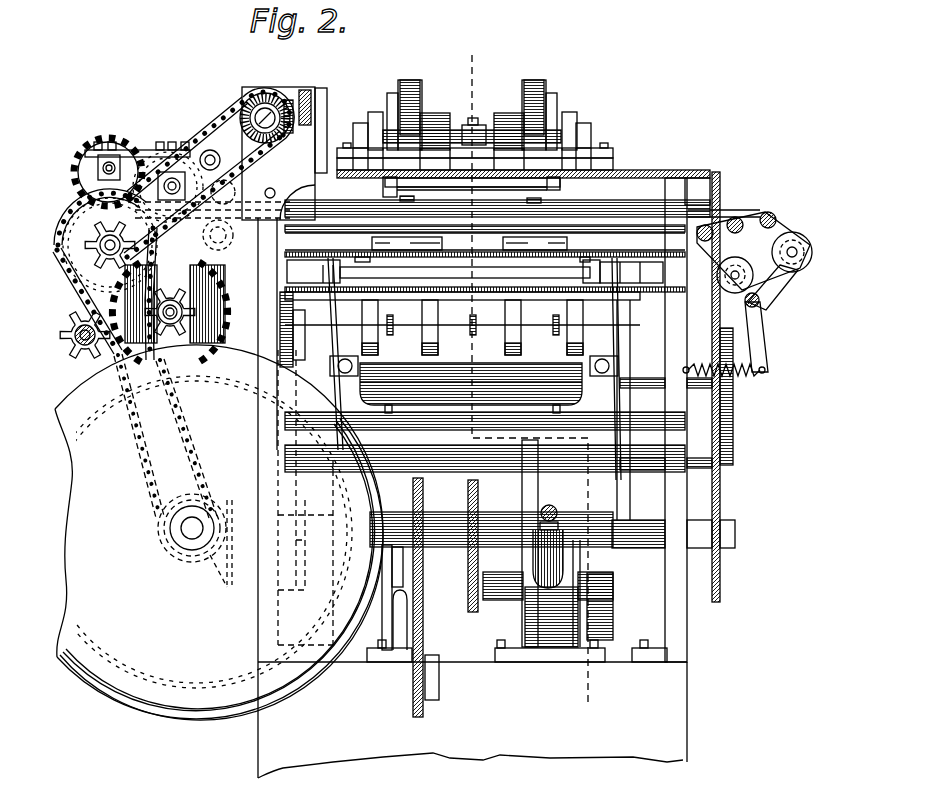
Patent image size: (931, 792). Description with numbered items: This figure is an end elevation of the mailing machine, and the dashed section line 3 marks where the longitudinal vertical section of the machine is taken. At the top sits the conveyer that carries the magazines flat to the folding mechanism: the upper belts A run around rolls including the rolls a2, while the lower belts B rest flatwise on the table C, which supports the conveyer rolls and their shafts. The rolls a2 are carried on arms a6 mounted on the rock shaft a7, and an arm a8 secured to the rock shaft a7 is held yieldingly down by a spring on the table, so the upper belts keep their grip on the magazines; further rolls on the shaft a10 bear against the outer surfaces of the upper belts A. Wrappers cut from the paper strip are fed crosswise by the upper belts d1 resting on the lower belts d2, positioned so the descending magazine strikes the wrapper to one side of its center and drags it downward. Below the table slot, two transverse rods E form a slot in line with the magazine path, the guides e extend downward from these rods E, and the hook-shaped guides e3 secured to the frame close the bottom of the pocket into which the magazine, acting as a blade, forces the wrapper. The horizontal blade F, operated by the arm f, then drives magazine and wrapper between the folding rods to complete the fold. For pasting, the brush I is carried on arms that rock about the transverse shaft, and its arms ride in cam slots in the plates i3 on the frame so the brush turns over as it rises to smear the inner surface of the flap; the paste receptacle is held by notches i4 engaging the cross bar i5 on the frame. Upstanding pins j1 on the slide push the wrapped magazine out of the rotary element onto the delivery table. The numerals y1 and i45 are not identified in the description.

The table C is at (634, 176).
The upper belts d1 is at (314, 217).
The lower belts d2 is at (631, 256).
The transverse rods E is at (582, 203).
The guides e is at (469, 243).
The horizontal blade F is at (540, 272).
The arm f is at (327, 338).
The hook-shaped guides e3 is at (512, 382).
The stud y1 is at (478, 332).
The upstanding pins j1 is at (560, 324).
The brush I is at (471, 384).
The plates i3 is at (471, 379).
The notches i4 is at (395, 412).
The cross bar i5 is at (485, 427).
The leg i45 is at (555, 412).
The section line 3- 3 is at (475, 58).
The upper belts A is at (420, 118).
The arms a6 is at (585, 106).
The rolls a2 is at (412, 92).
The rock shaft a7 is at (436, 140).
The arm a8 is at (474, 126).
The shaft a10 is at (452, 172).
The lower belts B is at (525, 194).